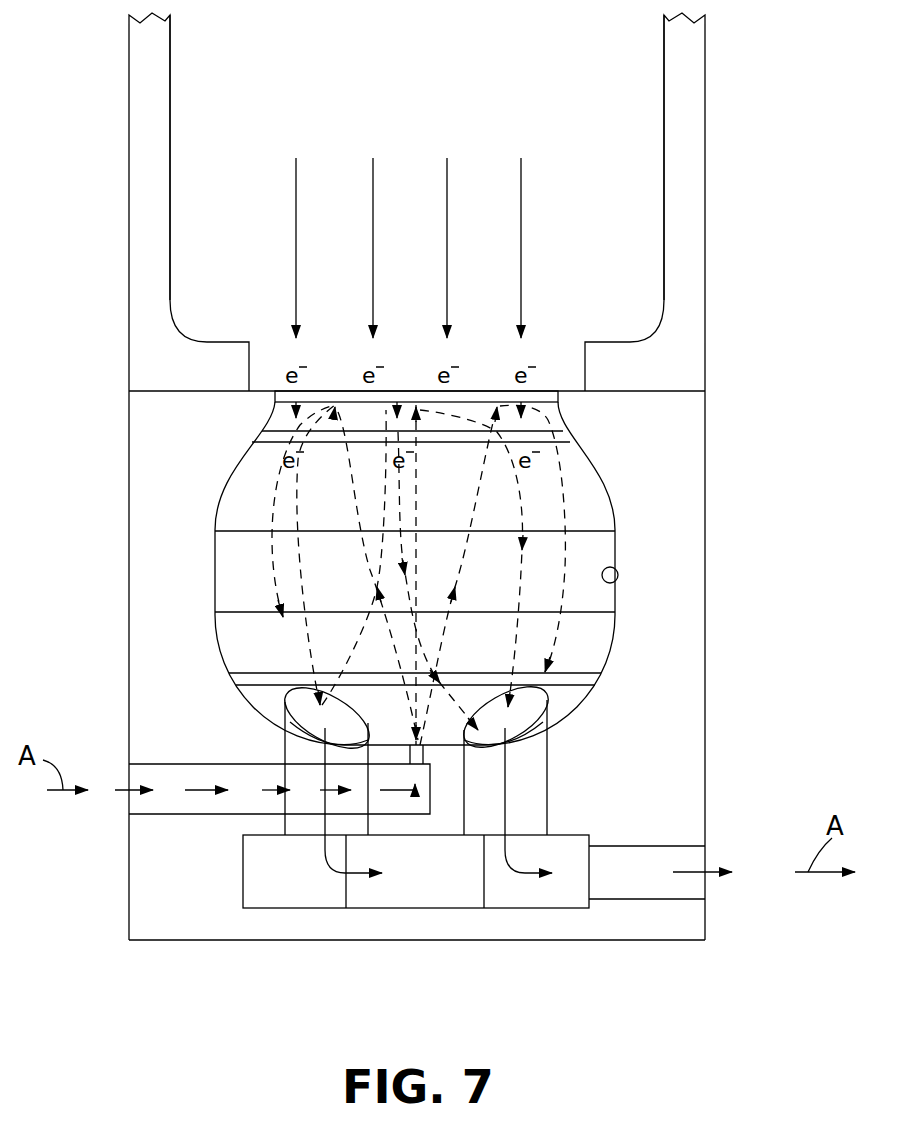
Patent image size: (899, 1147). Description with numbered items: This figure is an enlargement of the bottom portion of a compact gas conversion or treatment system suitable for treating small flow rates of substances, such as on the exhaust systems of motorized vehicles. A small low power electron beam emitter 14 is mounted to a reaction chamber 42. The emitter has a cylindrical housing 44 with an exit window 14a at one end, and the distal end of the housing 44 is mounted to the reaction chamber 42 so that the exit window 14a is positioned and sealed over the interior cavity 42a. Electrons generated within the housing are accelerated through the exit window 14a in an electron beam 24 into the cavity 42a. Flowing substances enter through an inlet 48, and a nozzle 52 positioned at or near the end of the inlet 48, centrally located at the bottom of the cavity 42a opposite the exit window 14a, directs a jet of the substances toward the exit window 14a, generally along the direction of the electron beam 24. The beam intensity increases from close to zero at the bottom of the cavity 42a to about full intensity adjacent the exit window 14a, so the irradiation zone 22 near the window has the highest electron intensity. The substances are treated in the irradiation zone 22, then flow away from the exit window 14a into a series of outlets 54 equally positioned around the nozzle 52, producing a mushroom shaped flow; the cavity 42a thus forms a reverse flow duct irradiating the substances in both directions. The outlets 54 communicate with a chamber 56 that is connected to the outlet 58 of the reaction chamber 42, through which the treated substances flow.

The electron beam emitter 14 is at (707, 62).
The cylindrical housing 44 is at (707, 150).
The exit window 14a is at (478, 391).
The electron beam 24 is at (285, 410).
The irradiation zone 22 is at (255, 455).
The reaction chamber 42 is at (707, 465).
The interior cavity 42a is at (618, 577).
The nozzle 52 is at (420, 745).
The outlets 54 is at (305, 713).
The inlet 48 is at (128, 805).
The chamber 56 is at (377, 892).
The outlet 58 is at (703, 883).